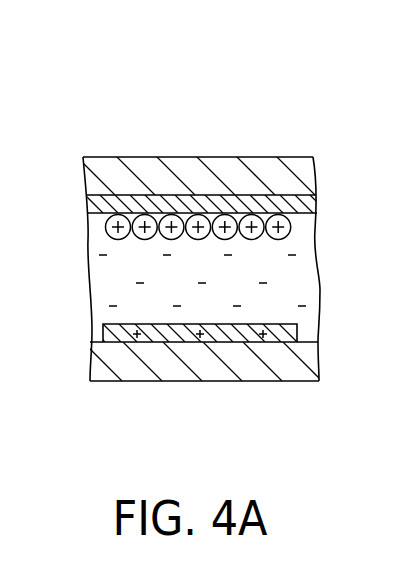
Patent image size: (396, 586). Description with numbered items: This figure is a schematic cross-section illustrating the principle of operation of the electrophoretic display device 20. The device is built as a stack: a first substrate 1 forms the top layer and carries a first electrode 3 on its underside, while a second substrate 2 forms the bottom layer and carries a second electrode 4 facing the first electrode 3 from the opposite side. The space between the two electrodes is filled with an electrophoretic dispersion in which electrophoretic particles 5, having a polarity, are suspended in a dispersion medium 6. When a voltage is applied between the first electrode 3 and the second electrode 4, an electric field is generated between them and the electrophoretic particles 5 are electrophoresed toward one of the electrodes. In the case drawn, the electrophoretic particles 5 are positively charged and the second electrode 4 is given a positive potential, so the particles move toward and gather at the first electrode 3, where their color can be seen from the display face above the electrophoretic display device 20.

The electrophoretic display device 20 is at (261, 113).
The first substrate 1 is at (292, 157).
The second substrate 2 is at (240, 367).
The first electrode 3 is at (131, 200).
The second electrode 4 is at (165, 328).
The electrophoretic particles 5 is at (103, 220).
The dispersion medium 6 is at (110, 278).